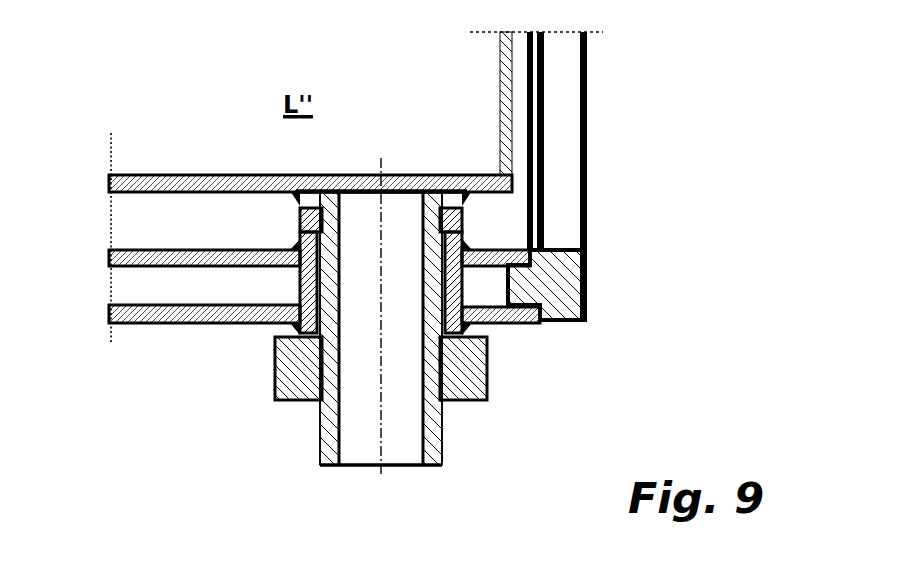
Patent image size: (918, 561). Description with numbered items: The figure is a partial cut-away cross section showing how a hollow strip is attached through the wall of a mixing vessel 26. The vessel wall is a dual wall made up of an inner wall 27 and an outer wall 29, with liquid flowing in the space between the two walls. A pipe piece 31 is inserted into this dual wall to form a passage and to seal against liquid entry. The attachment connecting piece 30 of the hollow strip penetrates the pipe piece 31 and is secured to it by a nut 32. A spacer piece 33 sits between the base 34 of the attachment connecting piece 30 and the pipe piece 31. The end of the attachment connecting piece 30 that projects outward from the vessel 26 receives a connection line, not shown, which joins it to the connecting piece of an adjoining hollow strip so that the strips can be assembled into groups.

The vessel 26 is at (296, 310).
The inner wall 27 is at (172, 245).
The outer wall 29 is at (176, 324).
The attachment connecting piece 30 is at (318, 437).
The pipe piece 31 is at (462, 278).
The nut 32 is at (491, 371).
The spacer piece 33 is at (466, 210).
The base 34 is at (447, 182).